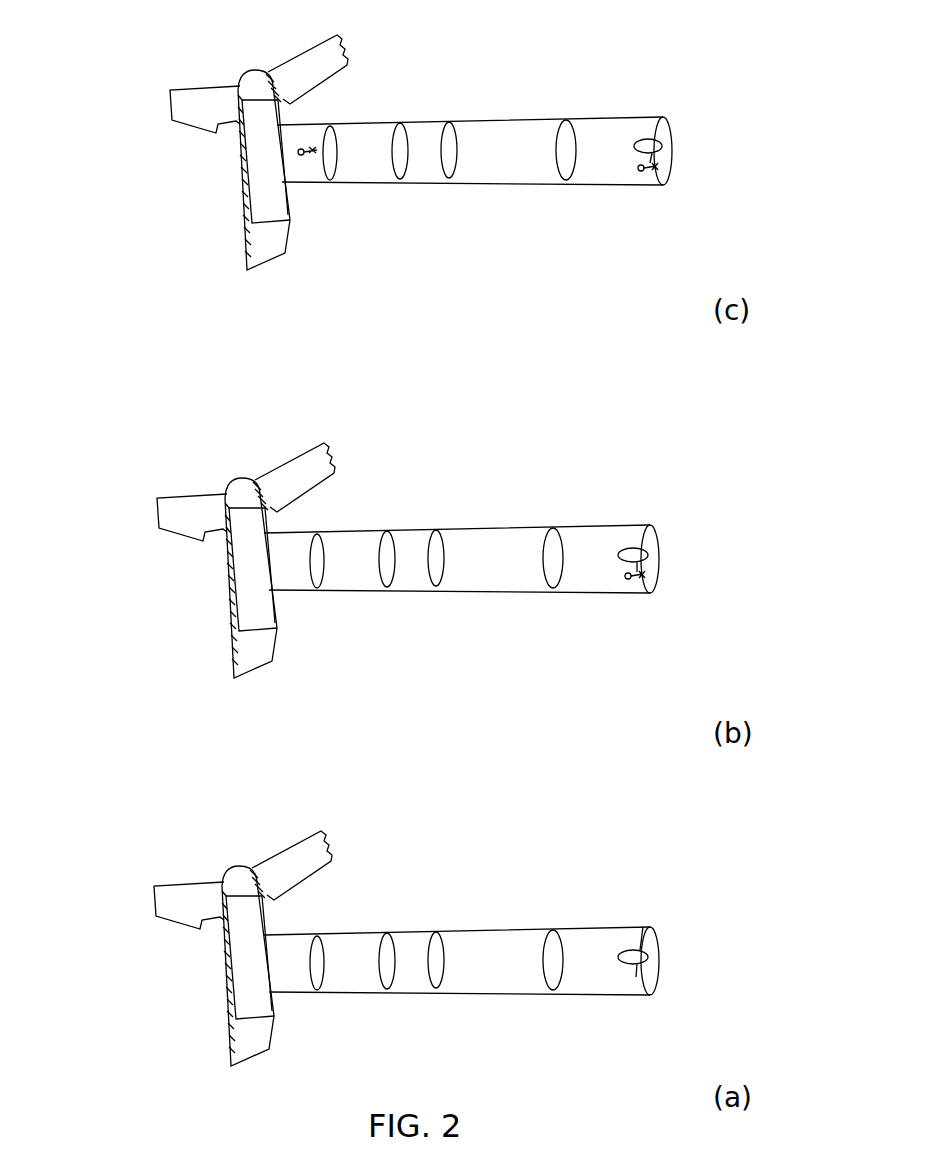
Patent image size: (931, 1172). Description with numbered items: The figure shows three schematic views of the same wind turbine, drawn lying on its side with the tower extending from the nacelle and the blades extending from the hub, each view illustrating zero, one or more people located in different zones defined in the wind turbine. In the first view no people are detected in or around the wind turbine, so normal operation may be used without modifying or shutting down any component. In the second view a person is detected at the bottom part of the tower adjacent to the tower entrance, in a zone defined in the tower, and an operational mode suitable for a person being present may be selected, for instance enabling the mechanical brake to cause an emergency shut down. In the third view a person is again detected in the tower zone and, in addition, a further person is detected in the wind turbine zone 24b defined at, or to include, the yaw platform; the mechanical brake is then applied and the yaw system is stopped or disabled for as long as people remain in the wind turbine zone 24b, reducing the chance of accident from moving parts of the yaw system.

The wind turbine zone 24b is at (337, 102).